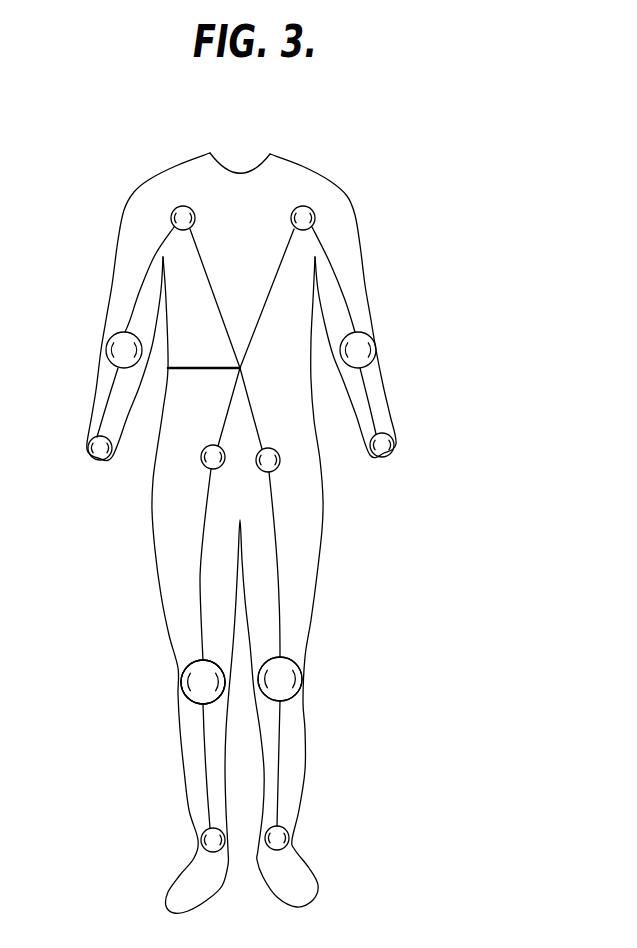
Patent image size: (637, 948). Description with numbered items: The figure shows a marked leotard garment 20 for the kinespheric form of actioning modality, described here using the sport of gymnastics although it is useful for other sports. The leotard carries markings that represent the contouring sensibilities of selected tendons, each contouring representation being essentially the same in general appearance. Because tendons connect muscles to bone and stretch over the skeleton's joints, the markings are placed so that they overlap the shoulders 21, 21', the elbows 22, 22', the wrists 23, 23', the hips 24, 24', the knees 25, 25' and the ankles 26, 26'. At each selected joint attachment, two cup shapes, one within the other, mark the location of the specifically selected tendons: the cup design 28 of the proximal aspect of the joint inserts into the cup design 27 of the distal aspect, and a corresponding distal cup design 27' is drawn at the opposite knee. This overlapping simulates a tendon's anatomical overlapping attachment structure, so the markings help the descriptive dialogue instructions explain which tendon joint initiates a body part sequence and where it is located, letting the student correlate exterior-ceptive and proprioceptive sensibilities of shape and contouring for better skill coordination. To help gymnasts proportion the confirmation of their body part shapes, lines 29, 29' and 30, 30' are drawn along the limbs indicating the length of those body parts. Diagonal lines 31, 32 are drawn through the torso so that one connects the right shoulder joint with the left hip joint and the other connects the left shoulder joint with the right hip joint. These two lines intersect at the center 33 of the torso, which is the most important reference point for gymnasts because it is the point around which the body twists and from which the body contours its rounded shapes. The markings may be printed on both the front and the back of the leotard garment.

The garment (body suit) 20 is at (388, 140).
The contouring representation at shoulder 21 is at (154, 196).
The contouring representation at shoulder 21' is at (340, 211).
The elbow marking 22 is at (100, 345).
The elbow marking 22' is at (382, 345).
The wrist marking 23 is at (79, 443).
The wrist marking 23' is at (403, 432).
The hip marking 24 is at (194, 467).
The hip marking 24' is at (277, 435).
The knee marking 25 is at (179, 682).
The knee marking 25' is at (309, 683).
The ankle marking 26 is at (191, 837).
The ankle marking 26' is at (301, 839).
The cup design of distal aspect 27 is at (189, 669).
The cup design of distal aspect 27' is at (303, 671).
The cup design of proximal aspect 28 is at (187, 700).
The limb length line 29 is at (172, 564).
The limb length line 29' is at (312, 564).
The limb length line 30 is at (179, 766).
The limb length line 30' is at (304, 763).
The diagonal line 31 is at (212, 282).
The diagonal line 32 is at (266, 312).
The center of torso 33 is at (205, 367).